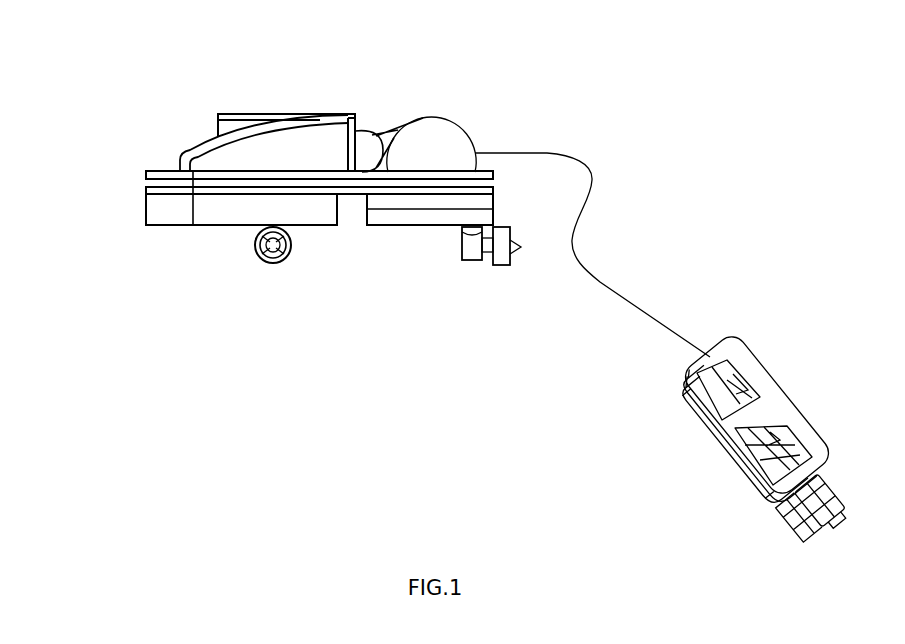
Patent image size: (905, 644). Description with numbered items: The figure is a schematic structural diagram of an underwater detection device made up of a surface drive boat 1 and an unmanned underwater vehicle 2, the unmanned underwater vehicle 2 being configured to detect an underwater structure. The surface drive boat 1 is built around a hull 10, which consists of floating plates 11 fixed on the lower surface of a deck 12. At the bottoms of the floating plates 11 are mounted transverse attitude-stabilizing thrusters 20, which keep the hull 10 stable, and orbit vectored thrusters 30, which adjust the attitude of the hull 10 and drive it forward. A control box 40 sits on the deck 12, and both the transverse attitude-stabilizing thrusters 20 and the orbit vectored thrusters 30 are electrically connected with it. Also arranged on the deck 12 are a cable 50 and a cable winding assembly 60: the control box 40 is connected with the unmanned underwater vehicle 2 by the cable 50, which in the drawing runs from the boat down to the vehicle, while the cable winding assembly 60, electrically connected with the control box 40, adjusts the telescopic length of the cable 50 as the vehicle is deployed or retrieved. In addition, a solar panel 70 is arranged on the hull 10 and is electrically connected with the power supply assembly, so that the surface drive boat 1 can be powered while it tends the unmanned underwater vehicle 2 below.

The surface drive boat 1 is at (215, 235).
The unmanned underwater vehicle 2 is at (778, 397).
The hull 10 is at (53, 172).
The floating plates 11 is at (150, 212).
The deck 12 is at (150, 185).
The transverse attitude-stabilizing thrusters 20 is at (268, 265).
The orbit vectored thrusters 30 is at (465, 263).
The control box 40 is at (216, 132).
The cable 50 is at (547, 153).
The cable winding assembly 60 is at (423, 117).
The solar panel 70 is at (172, 171).